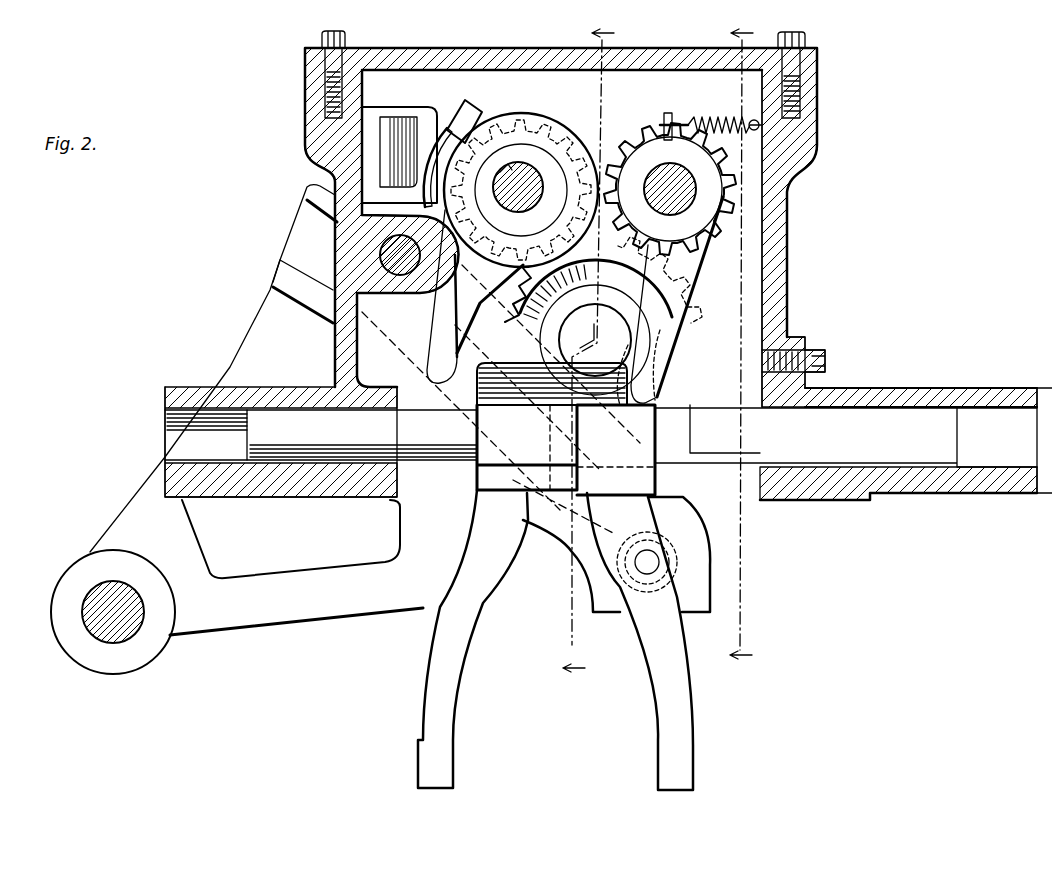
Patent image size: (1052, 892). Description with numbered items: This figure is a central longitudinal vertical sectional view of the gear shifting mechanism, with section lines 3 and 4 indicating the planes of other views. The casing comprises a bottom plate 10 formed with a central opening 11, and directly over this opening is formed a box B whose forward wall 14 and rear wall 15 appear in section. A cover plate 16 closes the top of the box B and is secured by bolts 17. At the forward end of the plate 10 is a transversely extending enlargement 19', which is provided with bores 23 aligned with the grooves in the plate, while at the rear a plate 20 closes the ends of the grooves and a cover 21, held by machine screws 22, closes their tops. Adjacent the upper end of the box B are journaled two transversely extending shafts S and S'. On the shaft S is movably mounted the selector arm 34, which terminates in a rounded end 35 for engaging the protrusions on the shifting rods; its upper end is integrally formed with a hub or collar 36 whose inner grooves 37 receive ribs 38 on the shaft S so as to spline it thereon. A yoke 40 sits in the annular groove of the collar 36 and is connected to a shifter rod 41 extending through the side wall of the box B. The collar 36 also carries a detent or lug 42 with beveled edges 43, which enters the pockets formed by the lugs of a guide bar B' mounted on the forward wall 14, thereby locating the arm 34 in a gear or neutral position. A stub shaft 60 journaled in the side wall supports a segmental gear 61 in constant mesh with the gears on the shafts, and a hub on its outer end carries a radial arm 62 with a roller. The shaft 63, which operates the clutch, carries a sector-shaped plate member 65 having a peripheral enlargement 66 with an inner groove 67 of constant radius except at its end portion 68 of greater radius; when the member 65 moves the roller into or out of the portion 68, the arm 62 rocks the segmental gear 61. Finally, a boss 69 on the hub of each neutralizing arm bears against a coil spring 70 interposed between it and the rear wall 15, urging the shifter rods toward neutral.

The section line 3- 3 is at (588, 353).
The section line 4- 4 is at (741, 346).
The bottom plate 10 is at (950, 500).
The central opening 11 is at (760, 500).
The forward wall 14 is at (337, 172).
The rear wall 15 is at (790, 285).
The cover plate 16 is at (455, 58).
The bolts 17 is at (352, 40).
The transversely extending enlargement 19' is at (206, 406).
The plate 20 is at (1045, 495).
The cover 21 is at (878, 392).
The machine screws 22 is at (820, 352).
The bores 23 is at (220, 430).
The selector arm 34 is at (440, 350).
The rounded end 35 is at (425, 380).
The hub or collar 36 is at (540, 118).
The grooves 37 is at (522, 165).
The ribs 38 is at (606, 140).
The yoke 40 is at (305, 200).
The shifter rod 41 is at (395, 257).
The detent or lug 42 is at (477, 118).
The beveled edges 43 is at (455, 110).
The stub shaft 60 is at (620, 340).
The segmental gear 61 is at (650, 290).
The arm 62 is at (645, 397).
The shaft 63 is at (140, 642).
The plate member 65 is at (310, 579).
The peripheral enlargement 66 is at (700, 600).
The groove 67 is at (470, 470).
The end portion 68 is at (630, 590).
The boss 69 is at (673, 112).
The coil spring 70 is at (705, 123).
The box B is at (795, 264).
The guide bar B' is at (399, 142).
The shaft S is at (519, 179).
The shaft S' is at (731, 189).